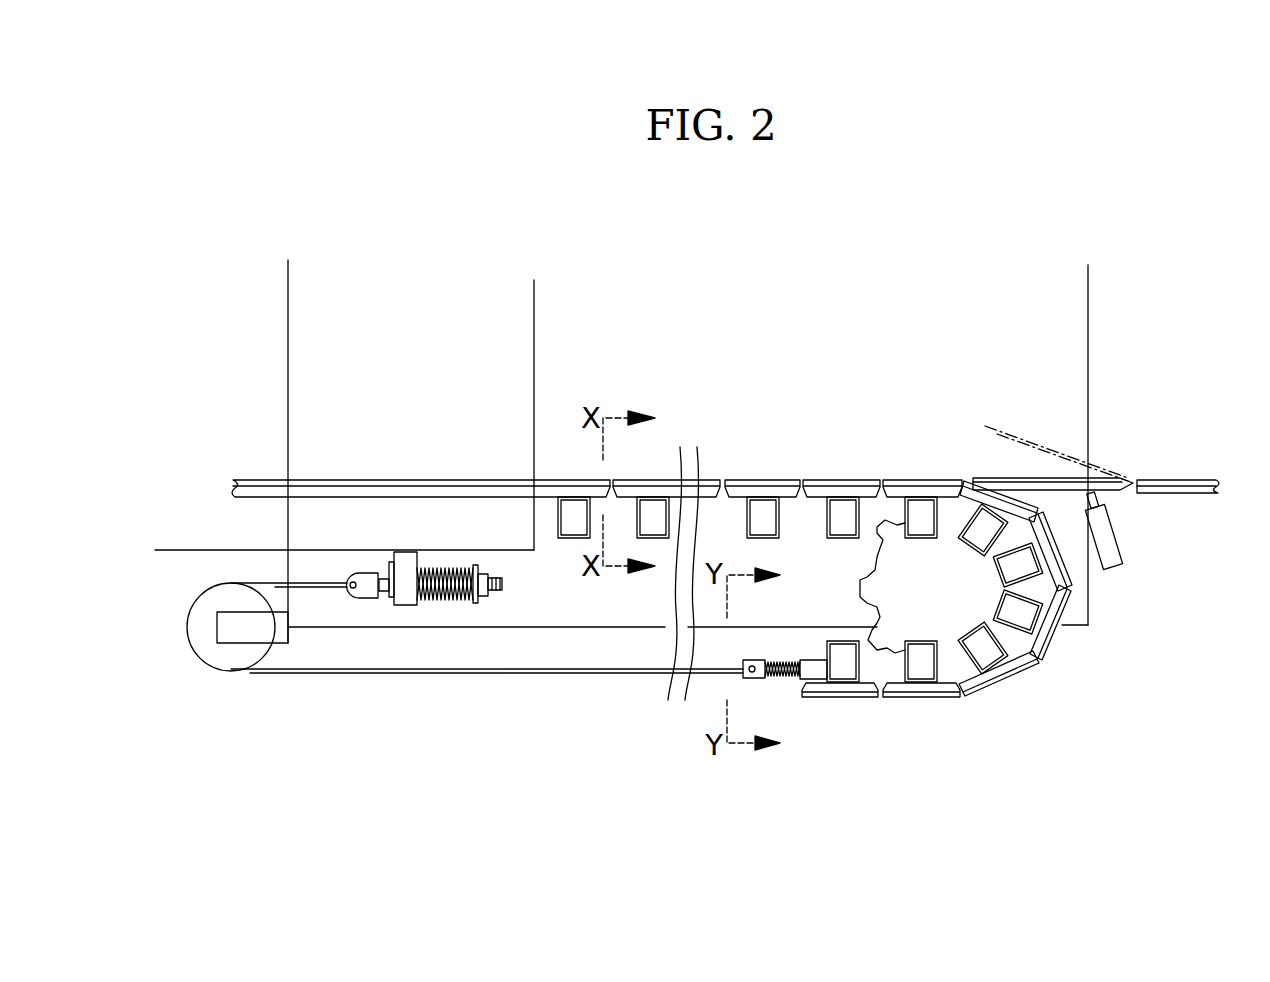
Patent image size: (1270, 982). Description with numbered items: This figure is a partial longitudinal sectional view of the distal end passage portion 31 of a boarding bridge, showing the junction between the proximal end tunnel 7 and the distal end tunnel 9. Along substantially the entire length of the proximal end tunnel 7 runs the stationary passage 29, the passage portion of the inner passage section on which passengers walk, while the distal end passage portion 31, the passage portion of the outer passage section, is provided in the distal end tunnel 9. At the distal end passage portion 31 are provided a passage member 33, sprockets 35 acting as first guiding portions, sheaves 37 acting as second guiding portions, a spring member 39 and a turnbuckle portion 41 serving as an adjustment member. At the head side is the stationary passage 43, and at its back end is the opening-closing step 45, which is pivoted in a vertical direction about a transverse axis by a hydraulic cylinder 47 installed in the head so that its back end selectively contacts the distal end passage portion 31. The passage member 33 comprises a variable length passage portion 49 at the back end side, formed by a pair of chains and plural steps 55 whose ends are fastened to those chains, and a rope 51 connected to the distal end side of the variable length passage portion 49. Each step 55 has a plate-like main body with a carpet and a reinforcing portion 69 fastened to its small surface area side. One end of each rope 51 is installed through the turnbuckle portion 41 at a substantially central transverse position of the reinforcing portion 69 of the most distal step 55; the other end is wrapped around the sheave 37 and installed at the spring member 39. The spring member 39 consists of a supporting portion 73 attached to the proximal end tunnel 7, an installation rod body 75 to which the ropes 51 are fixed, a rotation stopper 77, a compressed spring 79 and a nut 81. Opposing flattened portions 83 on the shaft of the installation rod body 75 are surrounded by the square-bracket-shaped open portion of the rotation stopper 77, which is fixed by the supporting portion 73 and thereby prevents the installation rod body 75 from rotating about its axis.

The proximal end tunnel 7 is at (536, 333).
The distal end tunnel 9 is at (1089, 350).
The stationary passage 29 is at (398, 478).
The distal end passage portion 31 is at (797, 340).
The passage member 33 is at (870, 442).
The sprockets 35 is at (883, 650).
The sheaves 37 is at (190, 612).
The spring member 39 is at (426, 617).
The turnbuckle portion 41 is at (778, 693).
The stationary passage 43 is at (1185, 480).
The opening-closing step 45 is at (1042, 488).
The hydraulic cylinder 47 is at (1118, 538).
The variable length passage portion 49 is at (1052, 645).
The rope 51 is at (575, 674).
The steps 55 is at (836, 721).
The reinforcing portion 69 is at (792, 537).
The supporting portion 73 is at (410, 554).
The installation rod body 75 is at (352, 598).
The rotation stopper 77 is at (388, 561).
The compressed spring 79 is at (445, 600).
The nut 81 is at (481, 570).
The flattened portions 83 is at (384, 592).